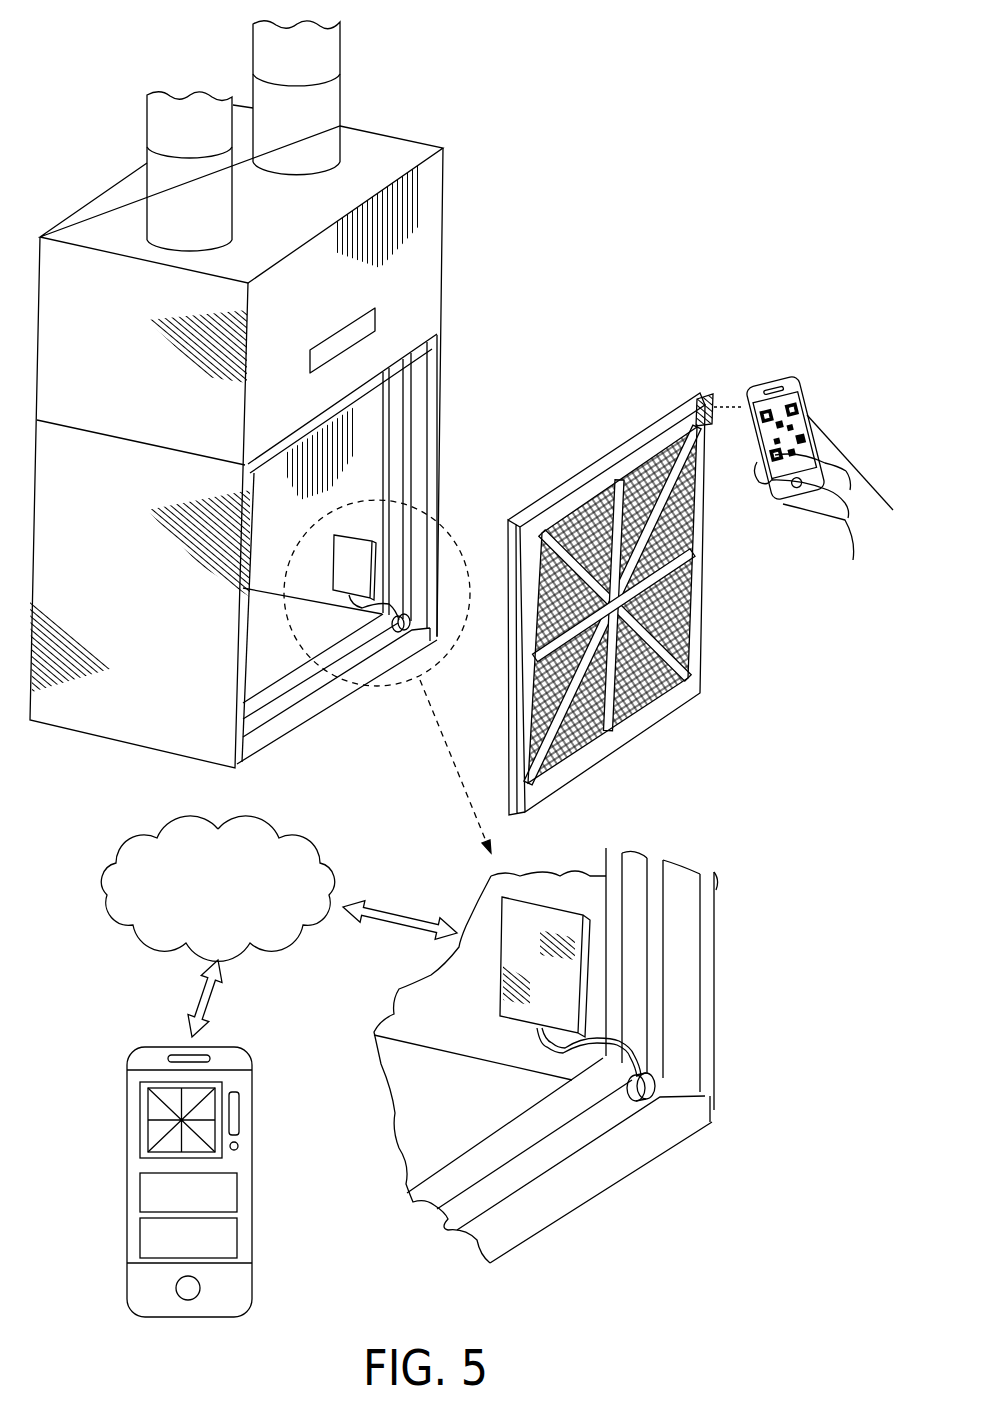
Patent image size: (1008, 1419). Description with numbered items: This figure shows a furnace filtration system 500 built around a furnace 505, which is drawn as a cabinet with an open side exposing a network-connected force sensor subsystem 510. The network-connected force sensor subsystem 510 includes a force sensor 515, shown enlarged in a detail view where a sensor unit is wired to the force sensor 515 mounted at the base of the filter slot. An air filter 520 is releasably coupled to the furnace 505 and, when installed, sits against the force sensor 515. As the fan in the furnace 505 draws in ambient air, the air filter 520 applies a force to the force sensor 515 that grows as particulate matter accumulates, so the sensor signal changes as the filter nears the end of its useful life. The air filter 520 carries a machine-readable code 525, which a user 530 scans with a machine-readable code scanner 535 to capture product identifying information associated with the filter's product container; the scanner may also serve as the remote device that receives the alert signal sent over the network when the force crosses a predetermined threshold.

The furnace filtration system 500 is at (494, 308).
The furnace 505 is at (114, 542).
The network-connected force sensor subsystem 510 is at (320, 562).
The force sensor 515 is at (668, 1080).
The air filter 520 is at (637, 724).
The machine-readable code 525 is at (684, 422).
The user 530 is at (862, 458).
The machine-readable code scanner 535 is at (787, 386).